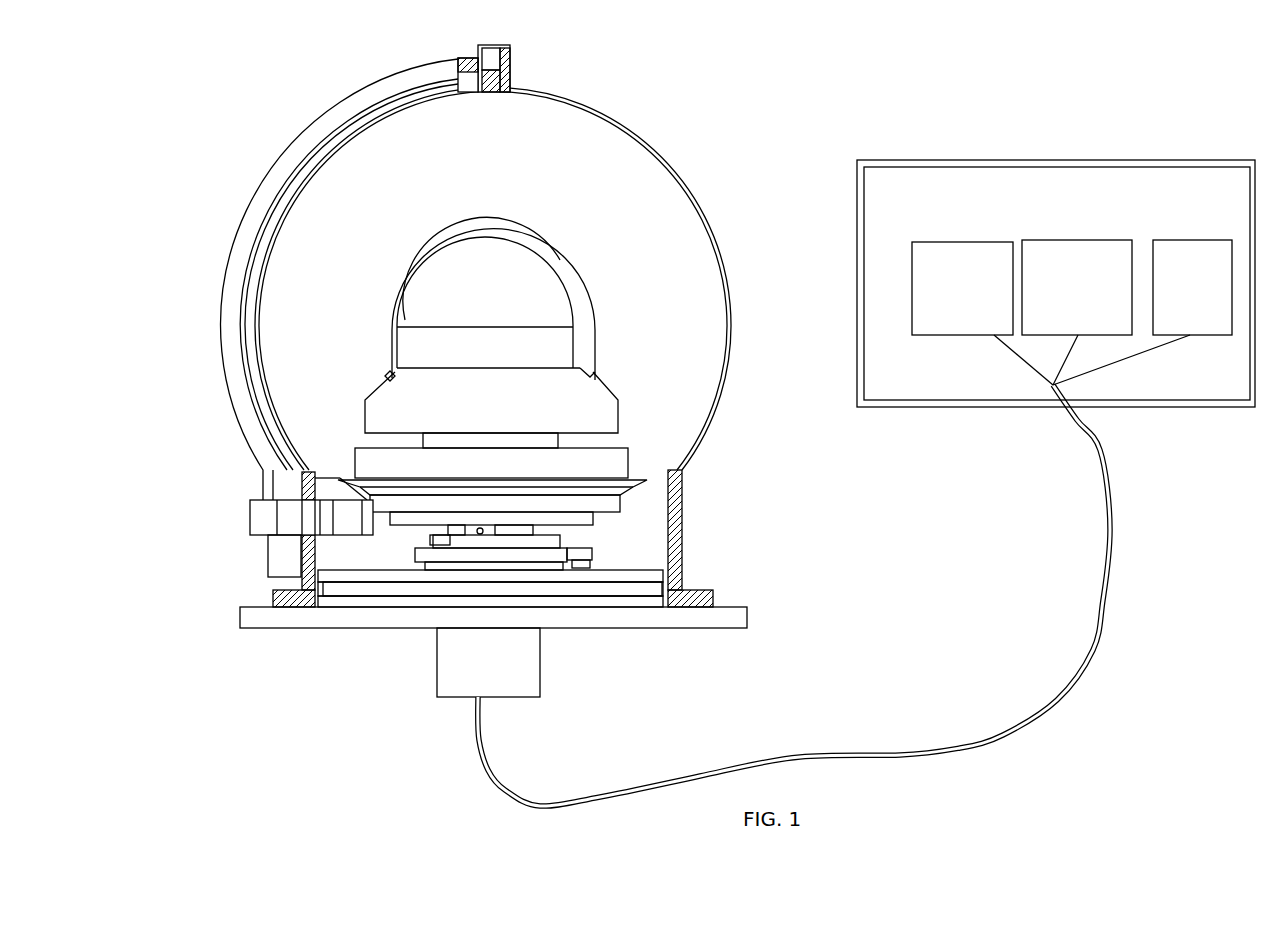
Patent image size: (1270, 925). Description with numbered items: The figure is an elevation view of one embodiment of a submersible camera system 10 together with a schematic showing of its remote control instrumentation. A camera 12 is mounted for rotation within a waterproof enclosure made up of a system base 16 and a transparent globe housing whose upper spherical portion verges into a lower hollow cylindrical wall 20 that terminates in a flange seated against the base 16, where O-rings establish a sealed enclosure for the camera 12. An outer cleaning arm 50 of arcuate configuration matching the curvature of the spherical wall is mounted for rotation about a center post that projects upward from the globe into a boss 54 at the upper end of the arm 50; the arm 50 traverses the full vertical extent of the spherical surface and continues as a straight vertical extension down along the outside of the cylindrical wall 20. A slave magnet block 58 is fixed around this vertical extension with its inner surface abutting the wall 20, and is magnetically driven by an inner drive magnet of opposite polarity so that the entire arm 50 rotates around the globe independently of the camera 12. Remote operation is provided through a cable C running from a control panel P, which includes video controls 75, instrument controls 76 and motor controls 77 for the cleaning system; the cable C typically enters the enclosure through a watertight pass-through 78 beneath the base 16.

The submersible camera system 10 is at (706, 442).
The camera 12 is at (475, 289).
The system base 16 is at (748, 618).
The cylindrical wall 20 is at (683, 517).
The outer cleaning arm 50 is at (320, 107).
The boss 54 is at (514, 62).
The slave magnet block 58 is at (265, 510).
The video controls 75 is at (912, 258).
The instrument controls 76 is at (1050, 240).
The motor controls 77 is at (1178, 238).
The watertight pass-through 78 is at (540, 668).
The control panel P is at (856, 337).
The cable C is at (1028, 715).